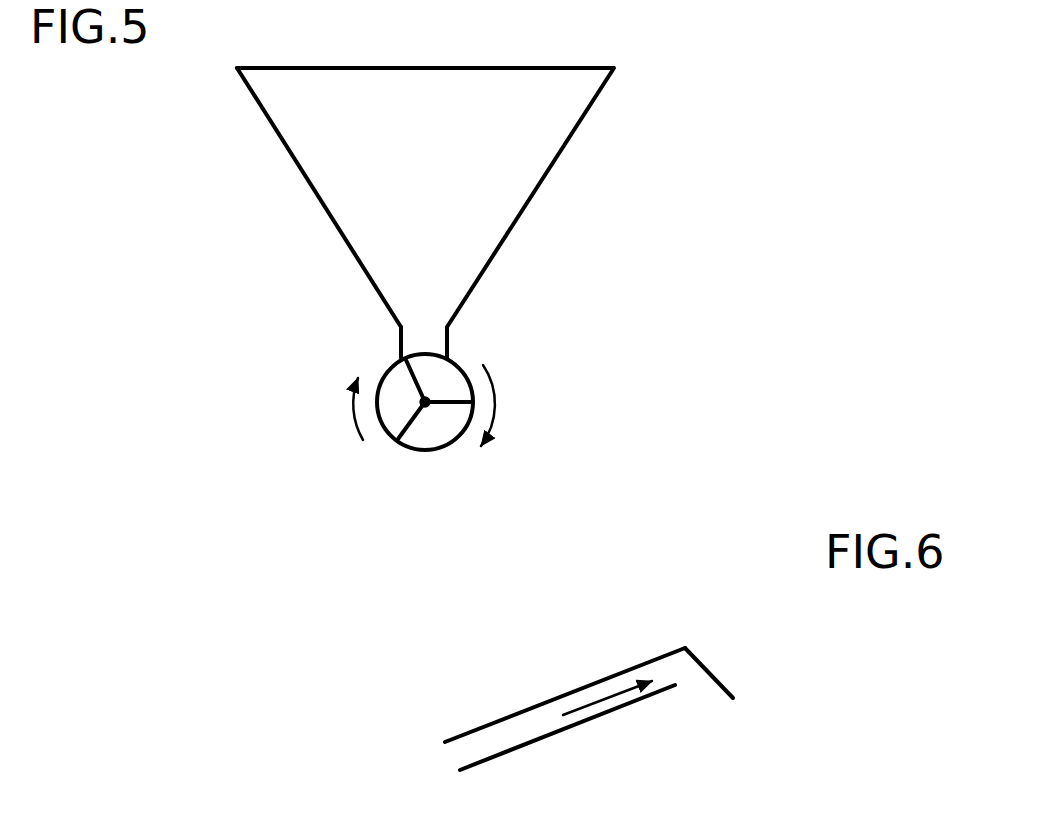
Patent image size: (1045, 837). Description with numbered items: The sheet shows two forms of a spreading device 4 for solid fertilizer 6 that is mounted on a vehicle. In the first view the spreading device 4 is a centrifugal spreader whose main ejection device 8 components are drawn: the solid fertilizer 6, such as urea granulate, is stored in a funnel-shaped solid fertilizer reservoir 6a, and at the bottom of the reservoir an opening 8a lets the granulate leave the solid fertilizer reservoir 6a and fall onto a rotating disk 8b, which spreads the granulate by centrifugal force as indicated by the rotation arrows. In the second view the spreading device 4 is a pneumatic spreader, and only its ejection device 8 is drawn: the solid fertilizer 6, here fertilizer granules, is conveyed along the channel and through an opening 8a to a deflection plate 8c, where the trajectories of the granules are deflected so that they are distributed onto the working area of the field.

In FIG. 5, the spreading device 4 is at (250, 213).
In FIG. 5, the solid fertilizer 6 is at (538, 147).
In FIG. 5, the solid fertilizer reservoir 6a is at (251, 117).
In FIG. 5, the ejection device 8 is at (483, 345).
In FIG. 6, the ejection device 8 is at (661, 642).
In FIG. 5, the opening 8a is at (380, 352).
In FIG. 6, the opening 8a is at (679, 692).
In FIG. 5, the rotating disk 8b is at (423, 461).
In FIG. 6, the deflection plate 8c is at (713, 660).